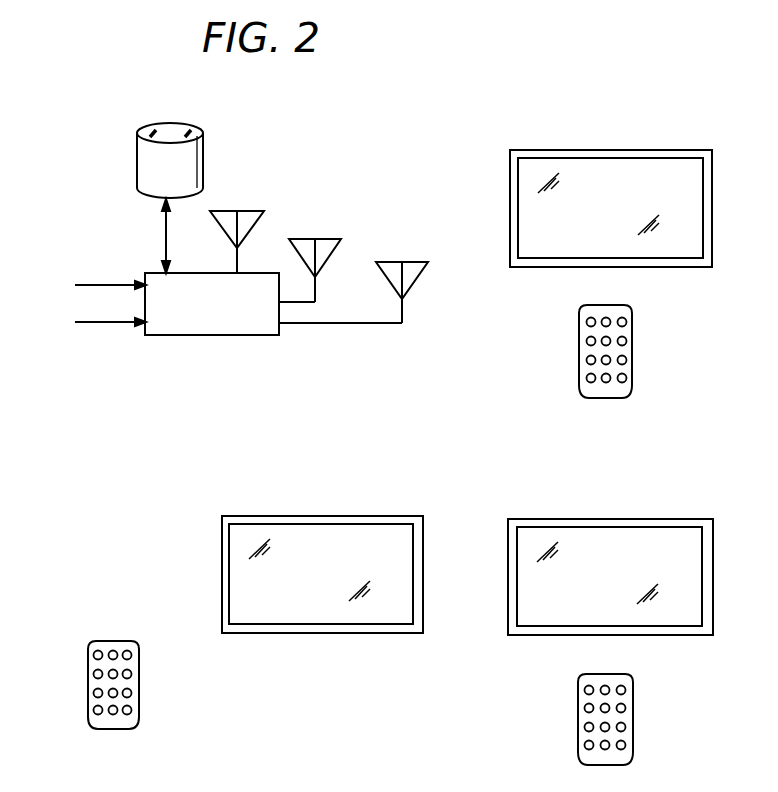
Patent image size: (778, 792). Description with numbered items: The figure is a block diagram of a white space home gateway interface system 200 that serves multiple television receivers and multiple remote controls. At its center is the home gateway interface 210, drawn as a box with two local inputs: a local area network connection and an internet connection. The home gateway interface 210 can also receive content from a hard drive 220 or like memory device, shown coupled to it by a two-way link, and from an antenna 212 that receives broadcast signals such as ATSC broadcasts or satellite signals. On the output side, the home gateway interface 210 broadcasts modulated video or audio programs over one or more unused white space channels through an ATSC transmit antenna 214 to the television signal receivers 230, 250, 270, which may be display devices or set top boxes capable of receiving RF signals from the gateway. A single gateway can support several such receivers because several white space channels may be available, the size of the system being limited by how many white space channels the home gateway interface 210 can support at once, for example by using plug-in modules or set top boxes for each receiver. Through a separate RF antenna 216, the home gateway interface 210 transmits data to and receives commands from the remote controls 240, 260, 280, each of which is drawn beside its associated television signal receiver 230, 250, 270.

The white space home gateway interface system 200 is at (391, 131).
The home gateway interface 210 is at (206, 338).
The antenna 212 is at (250, 210).
The ATSC transmit antenna 214 is at (328, 238).
The RF antenna 216 is at (410, 261).
The hard drive 220 is at (137, 157).
The television signal receiver 230 is at (610, 150).
The remote control 240 is at (632, 350).
The television signal receiver 250 is at (608, 519).
The remote control 260 is at (633, 718).
The television signal receiver 270 is at (320, 516).
The remote control 280 is at (139, 688).